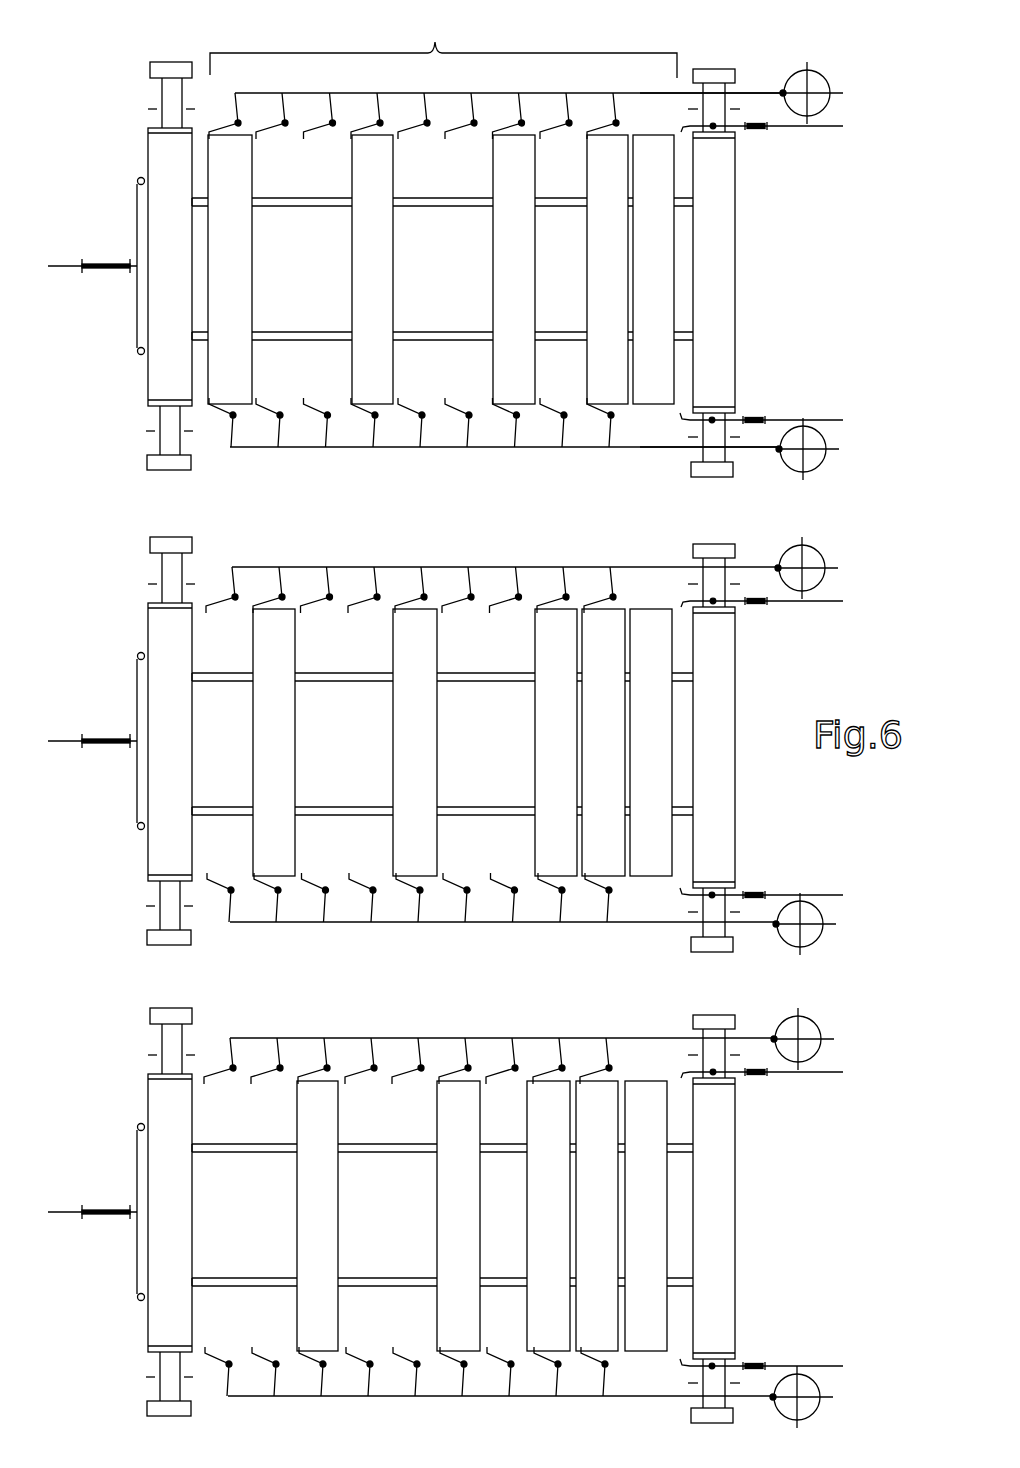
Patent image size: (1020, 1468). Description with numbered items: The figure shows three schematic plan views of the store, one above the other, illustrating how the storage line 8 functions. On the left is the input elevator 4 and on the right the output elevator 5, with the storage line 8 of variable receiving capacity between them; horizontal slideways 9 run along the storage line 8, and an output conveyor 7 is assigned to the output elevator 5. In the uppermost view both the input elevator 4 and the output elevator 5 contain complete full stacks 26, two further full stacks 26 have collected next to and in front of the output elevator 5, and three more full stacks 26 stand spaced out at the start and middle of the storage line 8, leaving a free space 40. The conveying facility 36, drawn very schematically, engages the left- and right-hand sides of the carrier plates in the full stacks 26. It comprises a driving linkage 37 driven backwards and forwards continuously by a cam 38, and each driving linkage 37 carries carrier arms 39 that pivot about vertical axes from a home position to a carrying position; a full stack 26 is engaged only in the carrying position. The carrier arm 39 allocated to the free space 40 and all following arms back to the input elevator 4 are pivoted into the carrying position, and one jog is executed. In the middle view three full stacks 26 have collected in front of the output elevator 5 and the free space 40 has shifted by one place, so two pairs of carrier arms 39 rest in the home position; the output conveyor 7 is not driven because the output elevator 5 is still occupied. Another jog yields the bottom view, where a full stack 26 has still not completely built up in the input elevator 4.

The input elevator 4 is at (172, 110).
The output elevator 5 is at (710, 438).
The output conveyor 7 is at (777, 127).
The storage line 8 is at (443, 43).
The horizontal slideways 9 is at (286, 203).
The full stack 26 is at (237, 377).
The conveying facility 36 is at (447, 93).
The driving linkage 37 is at (632, 93).
The cam 38 is at (810, 463).
The carrier arms 39 is at (360, 405).
The free space 40 is at (575, 245).